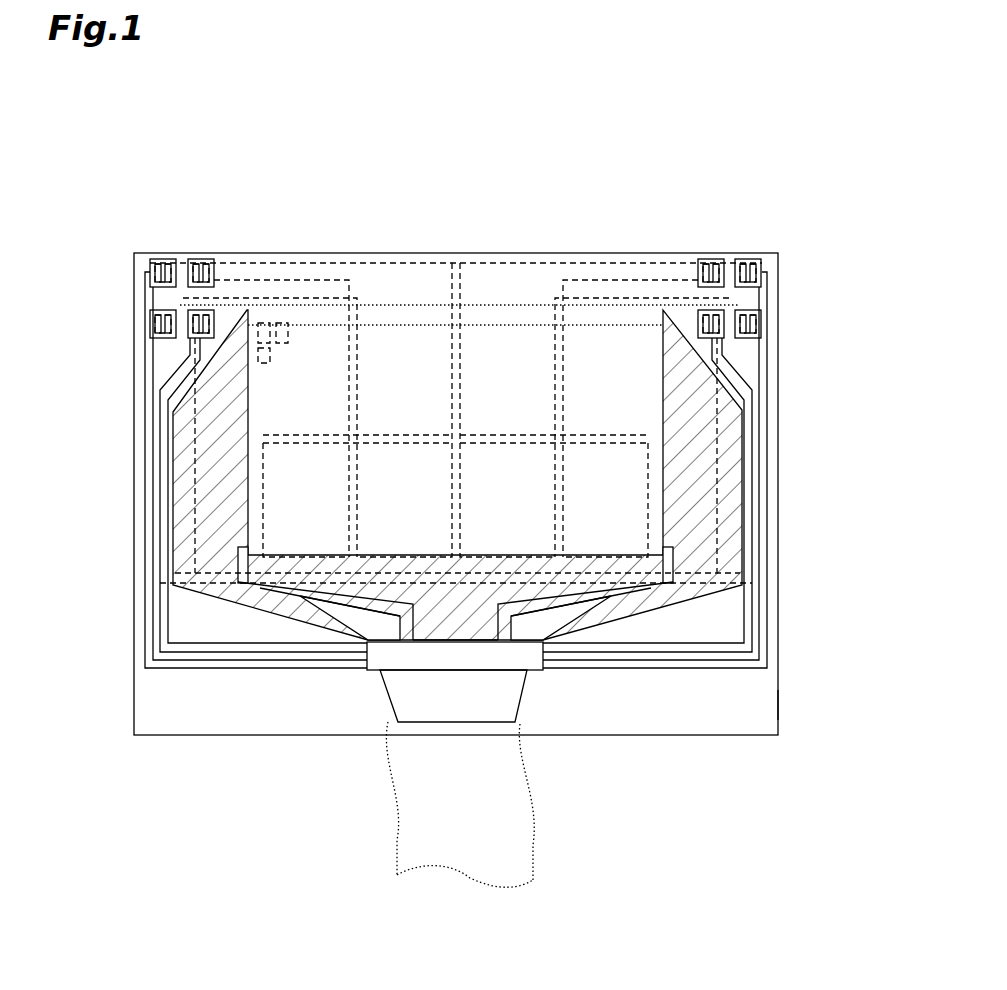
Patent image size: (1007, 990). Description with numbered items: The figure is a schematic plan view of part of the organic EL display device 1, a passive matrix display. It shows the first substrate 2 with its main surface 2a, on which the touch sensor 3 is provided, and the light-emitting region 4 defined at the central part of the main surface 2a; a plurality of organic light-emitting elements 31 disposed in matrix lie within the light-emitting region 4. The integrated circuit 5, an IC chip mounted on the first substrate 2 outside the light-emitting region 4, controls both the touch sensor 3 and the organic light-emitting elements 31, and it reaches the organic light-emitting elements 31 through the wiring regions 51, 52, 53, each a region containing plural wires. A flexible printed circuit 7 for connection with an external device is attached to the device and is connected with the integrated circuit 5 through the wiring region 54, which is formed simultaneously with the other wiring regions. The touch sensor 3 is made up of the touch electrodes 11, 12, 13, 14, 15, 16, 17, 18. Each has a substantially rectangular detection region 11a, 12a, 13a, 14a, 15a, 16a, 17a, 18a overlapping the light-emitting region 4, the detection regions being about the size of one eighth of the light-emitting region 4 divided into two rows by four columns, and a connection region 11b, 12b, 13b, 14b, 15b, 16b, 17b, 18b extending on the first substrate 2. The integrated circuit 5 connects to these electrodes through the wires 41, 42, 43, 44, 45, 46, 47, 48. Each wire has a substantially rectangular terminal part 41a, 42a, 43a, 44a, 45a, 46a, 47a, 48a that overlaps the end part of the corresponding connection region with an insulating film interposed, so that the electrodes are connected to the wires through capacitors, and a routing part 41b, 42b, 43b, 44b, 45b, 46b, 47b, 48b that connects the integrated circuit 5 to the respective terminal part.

The organic EL display device 1 is at (658, 100).
The first substrate 2 is at (723, 737).
The main surface 2a is at (779, 706).
The touch sensor 3 is at (322, 290).
The light-emitting region 4 is at (480, 305).
The integrated circuit 5 is at (530, 662).
The flexible printed circuit 7 is at (530, 836).
The touch electrode 11 is at (270, 364).
The detection region 11a is at (233, 207).
The connection region 11b is at (256, 298).
The touch electrode 12 is at (357, 348).
The detection region 12a is at (418, 330).
The connection region 12b is at (400, 345).
The touch electrode 13 is at (554, 348).
The detection region 13a is at (503, 345).
The connection region 13b is at (522, 330).
The touch electrode 14 is at (642, 364).
The detection region 14a is at (607, 280).
The connection region 14b is at (590, 207).
The touch electrode 15 is at (397, 495).
The detection region 15a is at (185, 490).
The connection region 15b is at (165, 472).
The touch electrode 16 is at (256, 502).
The detection region 16a is at (240, 702).
The connection region 16b is at (275, 669).
The touch electrode 17 is at (655, 502).
The detection region 17a is at (605, 669).
The connection region 17b is at (590, 702).
The touch electrode 18 is at (705, 495).
The detection region 18a is at (722, 490).
The connection region 18b is at (745, 472).
The organic light-emitting elements 31 is at (272, 360).
The wire 41 is at (73, 207).
The terminal part 41a is at (162, 259).
The routing part 41b is at (150, 270).
The wire 42 is at (155, 162).
The terminal part 42a is at (205, 259).
The routing part 42b is at (193, 259).
The wire 43 is at (672, 162).
The terminal part 43a is at (708, 259).
The routing part 43b is at (720, 259).
The wire 44 is at (843, 207).
The terminal part 44a is at (752, 259).
The routing part 44b is at (762, 270).
The wire 45 is at (84, 375).
The terminal part 45a is at (190, 330).
The routing part 45b is at (198, 337).
The wire 46 is at (84, 305).
The terminal part 46a is at (150, 319).
The routing part 46b is at (160, 333).
The wire 47 is at (828, 305).
The terminal part 47a is at (762, 322).
The routing part 47b is at (752, 333).
The wire 48 is at (828, 375).
The terminal part 48a is at (723, 330).
The routing part 48b is at (716, 337).
The wiring region 51 is at (395, 672).
The wiring region 52 is at (268, 600).
The wiring region 53 is at (640, 605).
The wiring region 54 is at (392, 718).